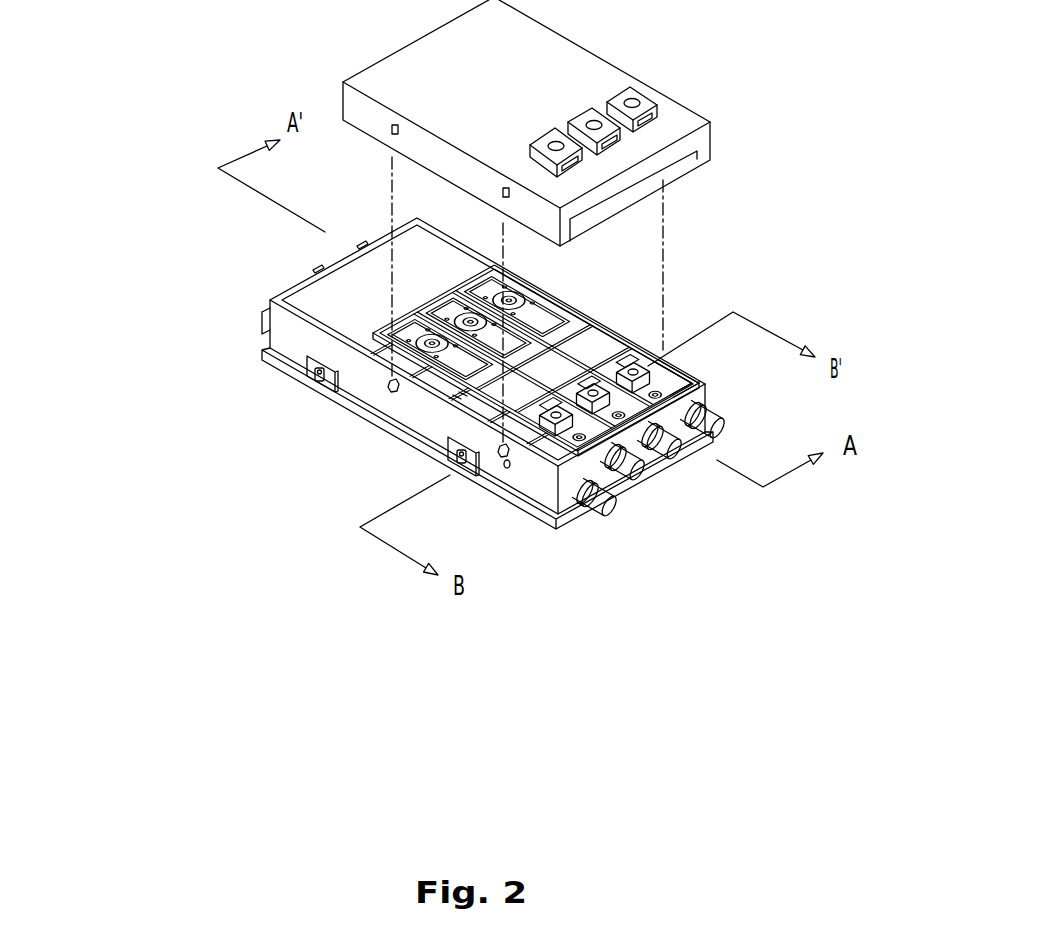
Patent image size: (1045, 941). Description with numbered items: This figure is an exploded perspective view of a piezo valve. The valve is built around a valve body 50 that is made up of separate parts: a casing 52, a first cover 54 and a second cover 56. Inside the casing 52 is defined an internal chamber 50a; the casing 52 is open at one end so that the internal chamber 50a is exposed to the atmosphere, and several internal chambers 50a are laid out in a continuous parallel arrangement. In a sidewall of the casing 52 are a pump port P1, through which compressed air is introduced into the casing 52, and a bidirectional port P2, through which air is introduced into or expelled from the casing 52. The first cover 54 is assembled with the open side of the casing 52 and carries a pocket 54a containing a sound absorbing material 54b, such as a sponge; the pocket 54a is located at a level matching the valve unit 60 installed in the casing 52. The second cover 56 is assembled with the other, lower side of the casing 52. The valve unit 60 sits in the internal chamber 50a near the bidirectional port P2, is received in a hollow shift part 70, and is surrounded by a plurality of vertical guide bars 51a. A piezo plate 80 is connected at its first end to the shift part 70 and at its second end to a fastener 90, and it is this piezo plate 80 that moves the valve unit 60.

The valve body 50 is at (167, 283).
The internal chamber 50a is at (457, 397).
The vertical guide bar 51a is at (650, 372).
The casing 52 is at (318, 313).
The first cover 54 is at (370, 122).
The pocket 54a is at (642, 100).
The sound absorbing material 54b is at (650, 120).
The second cover 56 is at (337, 396).
The valve unit 60 is at (683, 352).
The shift part 70 is at (640, 382).
The piezo plate 80 is at (583, 332).
The fastener 90 is at (512, 297).
The pump port P1 is at (600, 505).
The bidirectional port P2 is at (705, 468).